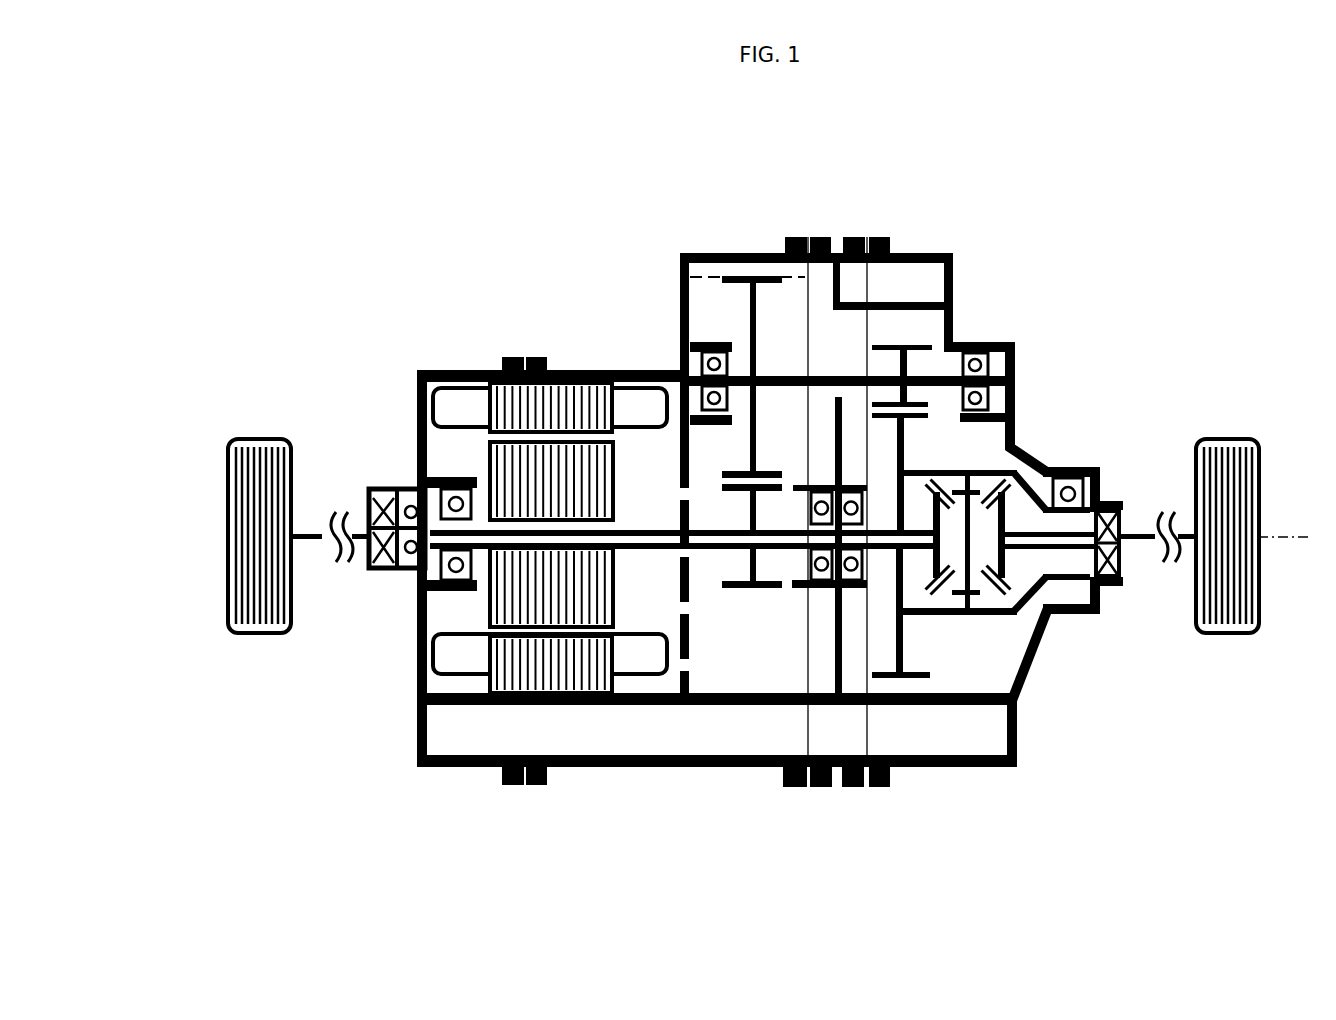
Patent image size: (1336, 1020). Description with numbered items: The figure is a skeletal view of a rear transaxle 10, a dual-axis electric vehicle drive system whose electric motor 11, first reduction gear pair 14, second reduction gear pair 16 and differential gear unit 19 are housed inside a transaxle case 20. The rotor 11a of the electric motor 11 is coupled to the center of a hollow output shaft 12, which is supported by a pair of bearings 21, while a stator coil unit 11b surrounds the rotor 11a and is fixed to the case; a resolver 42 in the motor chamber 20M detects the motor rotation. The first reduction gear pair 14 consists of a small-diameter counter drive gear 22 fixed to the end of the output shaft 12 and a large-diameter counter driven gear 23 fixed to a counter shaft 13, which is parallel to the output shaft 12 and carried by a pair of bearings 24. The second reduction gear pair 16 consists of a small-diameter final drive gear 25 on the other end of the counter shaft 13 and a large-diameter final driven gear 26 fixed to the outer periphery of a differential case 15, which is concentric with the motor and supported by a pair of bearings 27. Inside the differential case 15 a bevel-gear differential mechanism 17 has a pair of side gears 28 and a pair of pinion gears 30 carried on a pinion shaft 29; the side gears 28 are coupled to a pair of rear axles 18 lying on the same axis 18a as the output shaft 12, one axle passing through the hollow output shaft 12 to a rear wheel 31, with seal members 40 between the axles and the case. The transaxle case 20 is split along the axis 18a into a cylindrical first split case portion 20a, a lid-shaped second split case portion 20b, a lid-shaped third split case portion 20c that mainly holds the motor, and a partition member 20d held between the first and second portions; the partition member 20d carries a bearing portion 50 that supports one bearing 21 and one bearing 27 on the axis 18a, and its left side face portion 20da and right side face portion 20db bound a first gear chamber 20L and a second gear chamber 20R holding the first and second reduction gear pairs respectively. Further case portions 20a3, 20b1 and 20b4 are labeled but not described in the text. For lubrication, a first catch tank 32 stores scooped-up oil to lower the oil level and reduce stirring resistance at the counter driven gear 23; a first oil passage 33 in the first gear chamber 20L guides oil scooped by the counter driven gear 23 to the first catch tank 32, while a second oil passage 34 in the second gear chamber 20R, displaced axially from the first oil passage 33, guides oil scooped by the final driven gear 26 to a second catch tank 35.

The rear transaxle 10 is at (1118, 254).
The electric motor 11 is at (465, 534).
The rotor 11a is at (508, 578).
The stator coil unit 11b is at (503, 678).
The output shaft 12 is at (681, 716).
The counter shaft 13 is at (752, 393).
The first reduction gear pair 14 is at (737, 337).
The differential case 15 is at (995, 602).
The second reduction gear pair 16 is at (976, 263).
The differential mechanism 17 is at (1096, 421).
The rear axles 18 is at (744, 614).
The axis 18a is at (1270, 545).
The differential gear unit 19 is at (1086, 674).
The transaxle case 20 is at (737, 790).
The first split case portion 20a is at (552, 628).
The housing wall portion 20a3 is at (752, 228).
The second split case portion 20b is at (932, 767).
The gear housing side wall 20b1 is at (1024, 406).
The gear housing end wall 20b4 is at (1107, 528).
The third split case portion 20c is at (698, 796).
The partition member 20d is at (835, 645).
The left side face portion 20da is at (807, 325).
The right side face portion 20db is at (873, 330).
The first gear chamber 20L is at (738, 705).
The motor chamber 20M is at (648, 475).
The second gear chamber 20R is at (944, 241).
The bearings 21 is at (592, 367).
The counter drive gear 22 is at (707, 736).
The counter driven gear 23 is at (735, 277).
The bearings 24 is at (836, 338).
The final drive gear 25 is at (917, 302).
The final driven gear 26 is at (901, 638).
The bearings 27 is at (1020, 377).
The side gears 28 is at (977, 577).
The pinion shaft 29 is at (969, 680).
The pinion gears 30 is at (1046, 584).
The rear wheels 31 is at (743, 593).
The first catch tank 32 is at (610, 821).
The first oil passage 33 is at (712, 250).
The second oil passage 34 is at (920, 780).
The second catch tank 35 is at (918, 232).
The seal members 40 is at (370, 510).
The resolver 42 is at (683, 467).
The bearing portion 50 is at (827, 600).